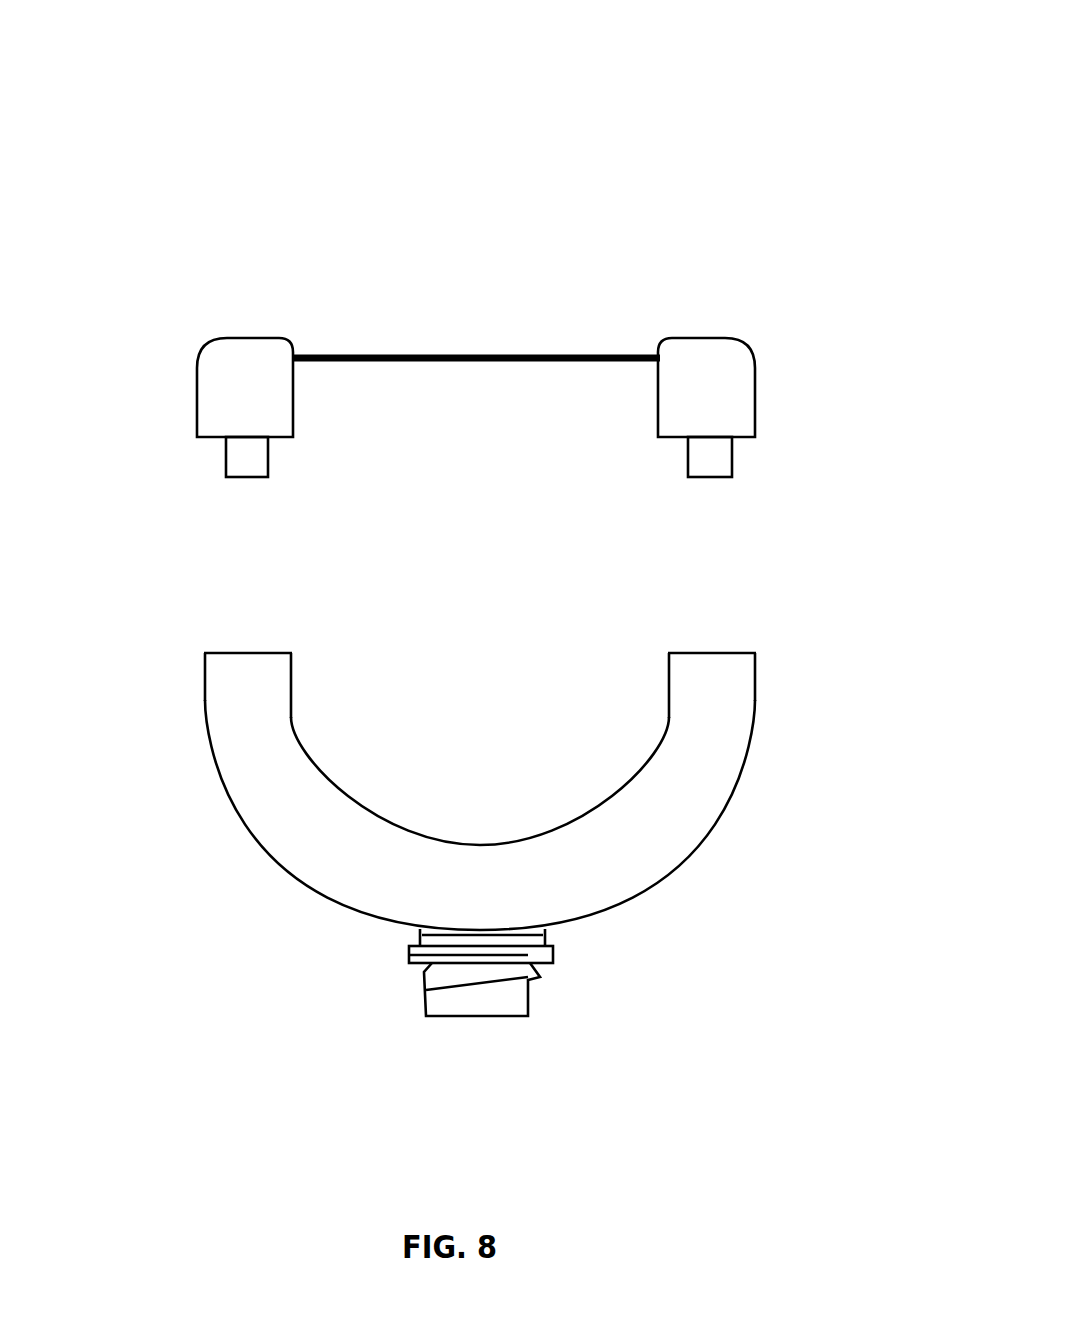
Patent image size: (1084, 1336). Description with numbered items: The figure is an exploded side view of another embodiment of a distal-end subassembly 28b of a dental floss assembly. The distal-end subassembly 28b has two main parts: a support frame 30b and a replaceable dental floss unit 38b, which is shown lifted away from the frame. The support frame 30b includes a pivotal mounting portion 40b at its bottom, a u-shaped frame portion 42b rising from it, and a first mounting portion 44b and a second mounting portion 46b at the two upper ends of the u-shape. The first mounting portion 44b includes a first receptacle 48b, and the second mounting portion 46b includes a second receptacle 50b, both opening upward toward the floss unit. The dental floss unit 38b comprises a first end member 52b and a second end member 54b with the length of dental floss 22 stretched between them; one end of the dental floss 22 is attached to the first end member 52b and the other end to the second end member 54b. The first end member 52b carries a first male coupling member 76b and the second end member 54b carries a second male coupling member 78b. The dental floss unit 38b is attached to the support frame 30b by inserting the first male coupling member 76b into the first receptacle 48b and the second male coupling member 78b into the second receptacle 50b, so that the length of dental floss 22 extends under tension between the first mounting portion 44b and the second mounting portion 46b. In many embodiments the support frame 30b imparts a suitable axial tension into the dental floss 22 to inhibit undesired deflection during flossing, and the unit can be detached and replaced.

The distal-end subassembly 28b is at (788, 95).
The replaceable dental floss unit 38b is at (318, 213).
The first end member 52b is at (208, 346).
The second end member 54b is at (745, 344).
The length of dental floss 22 is at (453, 355).
The first male coupling member 76b is at (226, 454).
The second male coupling member 78b is at (732, 454).
The support frame 30b is at (822, 768).
The u-shaped frame portion 42b is at (256, 842).
The first mounting portion 44b is at (175, 640).
The second mounting portion 46b is at (797, 634).
The first receptacle 48b is at (250, 638).
The second receptacle 50b is at (710, 640).
The pivotal mounting portion 40b is at (372, 1003).